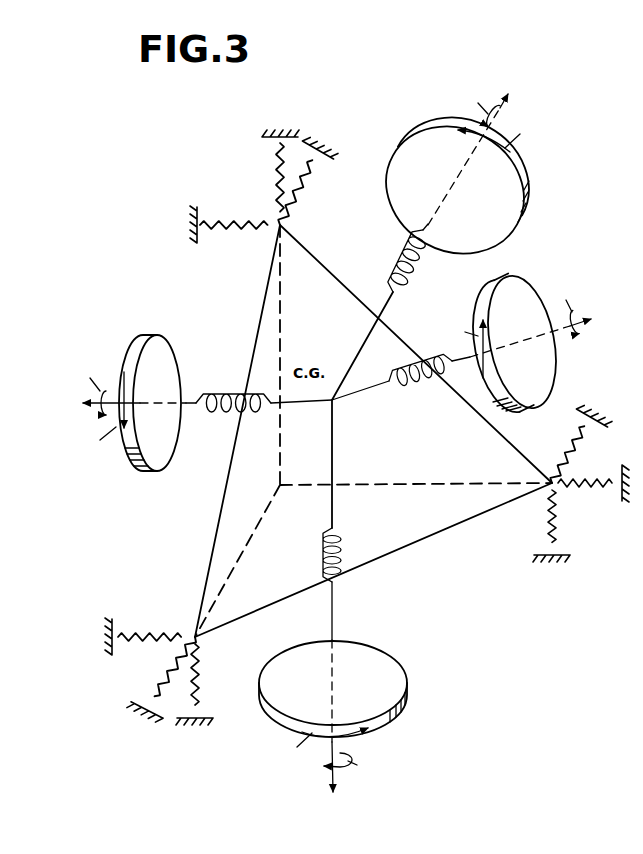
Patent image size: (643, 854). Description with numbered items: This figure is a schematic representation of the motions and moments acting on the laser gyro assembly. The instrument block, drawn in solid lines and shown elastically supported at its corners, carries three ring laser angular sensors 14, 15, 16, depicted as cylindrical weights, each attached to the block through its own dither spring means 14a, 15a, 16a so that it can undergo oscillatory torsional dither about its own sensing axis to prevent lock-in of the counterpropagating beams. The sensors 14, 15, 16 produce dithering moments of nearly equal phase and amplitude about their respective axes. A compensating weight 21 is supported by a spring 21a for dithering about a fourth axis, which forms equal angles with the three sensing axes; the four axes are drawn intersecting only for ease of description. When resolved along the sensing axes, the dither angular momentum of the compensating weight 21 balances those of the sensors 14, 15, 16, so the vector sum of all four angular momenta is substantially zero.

The laser angular sensor 14 is at (164, 470).
The dither spring means 14a is at (229, 394).
The laser angular sensor 15 is at (383, 655).
The dither spring means 15a is at (322, 560).
The laser angular sensor 16 is at (425, 130).
The dither spring means 16a is at (422, 254).
The compensating weight 21 is at (551, 372).
The spring 21a is at (437, 376).